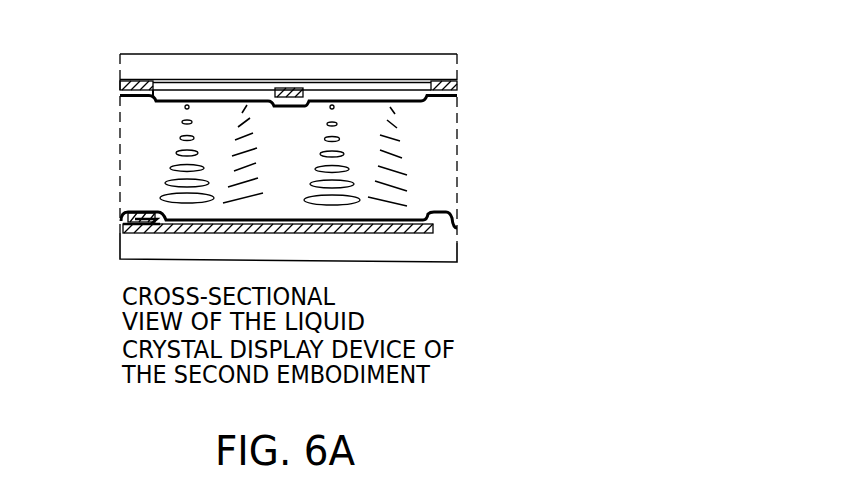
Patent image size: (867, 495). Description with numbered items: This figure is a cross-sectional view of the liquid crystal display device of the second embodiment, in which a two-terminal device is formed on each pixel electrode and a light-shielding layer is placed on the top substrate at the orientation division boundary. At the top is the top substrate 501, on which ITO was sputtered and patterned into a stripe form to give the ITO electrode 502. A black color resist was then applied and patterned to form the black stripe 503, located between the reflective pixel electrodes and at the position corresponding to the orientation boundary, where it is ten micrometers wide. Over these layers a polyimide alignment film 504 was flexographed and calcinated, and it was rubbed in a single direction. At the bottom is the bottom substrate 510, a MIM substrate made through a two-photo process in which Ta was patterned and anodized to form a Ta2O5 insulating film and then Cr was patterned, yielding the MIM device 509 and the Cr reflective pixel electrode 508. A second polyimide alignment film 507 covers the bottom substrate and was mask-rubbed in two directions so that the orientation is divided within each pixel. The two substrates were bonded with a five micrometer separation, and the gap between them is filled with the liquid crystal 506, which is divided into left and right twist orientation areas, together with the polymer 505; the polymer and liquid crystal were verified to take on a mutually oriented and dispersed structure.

The top substrate 501 is at (363, 63).
The ITO electrode 502 is at (410, 82).
The black stripe 503 is at (452, 94).
The alignment film 504 is at (428, 102).
The polymer 505 is at (344, 155).
The liquid crystal 506 is at (403, 182).
The alignment film 507 is at (452, 228).
The reflective pixel electrode 508 is at (395, 231).
The MIM device 509 is at (138, 231).
The bottom substrate 510 is at (363, 247).